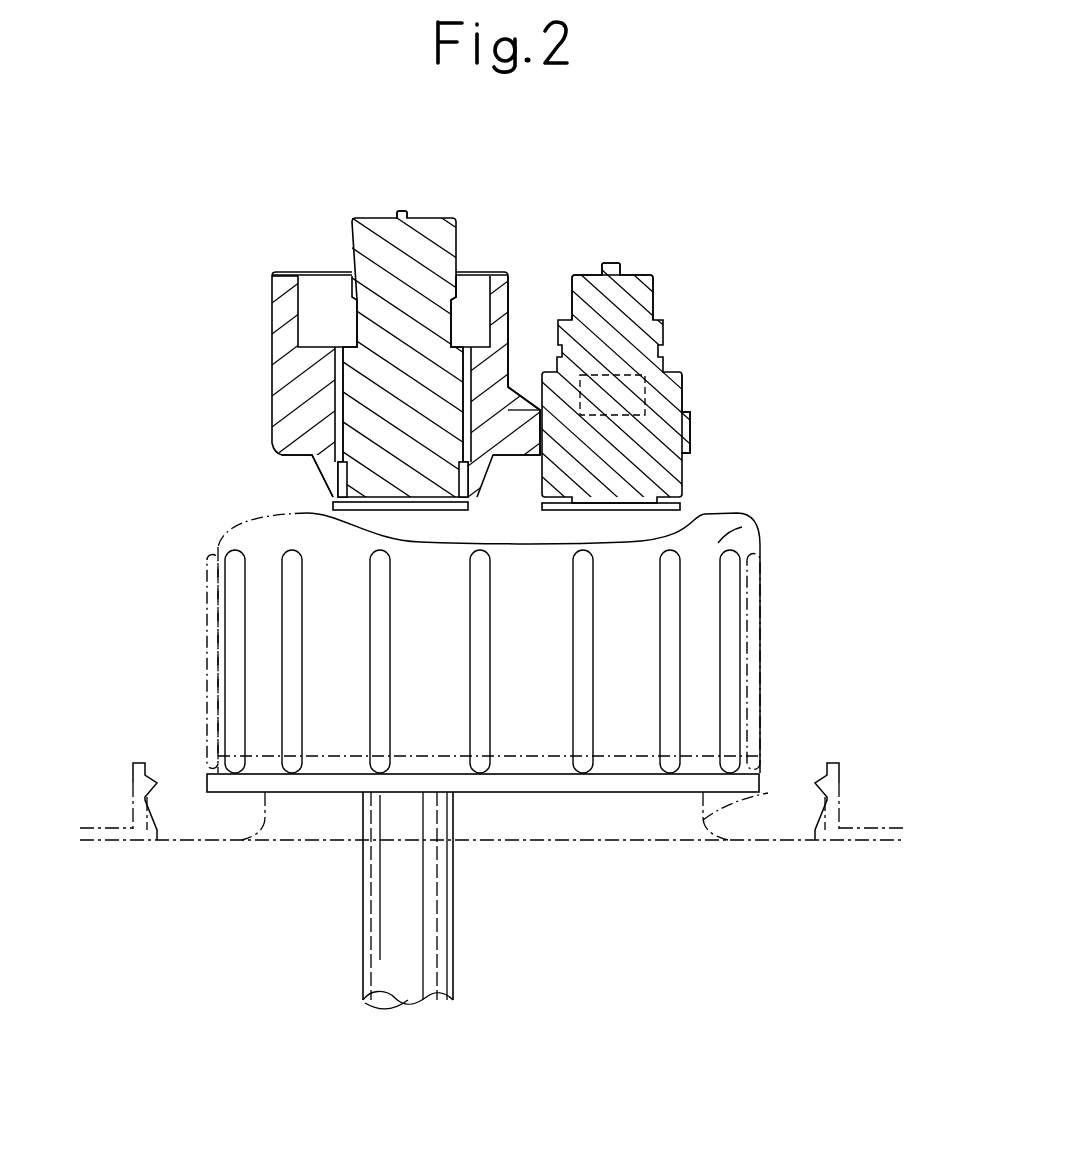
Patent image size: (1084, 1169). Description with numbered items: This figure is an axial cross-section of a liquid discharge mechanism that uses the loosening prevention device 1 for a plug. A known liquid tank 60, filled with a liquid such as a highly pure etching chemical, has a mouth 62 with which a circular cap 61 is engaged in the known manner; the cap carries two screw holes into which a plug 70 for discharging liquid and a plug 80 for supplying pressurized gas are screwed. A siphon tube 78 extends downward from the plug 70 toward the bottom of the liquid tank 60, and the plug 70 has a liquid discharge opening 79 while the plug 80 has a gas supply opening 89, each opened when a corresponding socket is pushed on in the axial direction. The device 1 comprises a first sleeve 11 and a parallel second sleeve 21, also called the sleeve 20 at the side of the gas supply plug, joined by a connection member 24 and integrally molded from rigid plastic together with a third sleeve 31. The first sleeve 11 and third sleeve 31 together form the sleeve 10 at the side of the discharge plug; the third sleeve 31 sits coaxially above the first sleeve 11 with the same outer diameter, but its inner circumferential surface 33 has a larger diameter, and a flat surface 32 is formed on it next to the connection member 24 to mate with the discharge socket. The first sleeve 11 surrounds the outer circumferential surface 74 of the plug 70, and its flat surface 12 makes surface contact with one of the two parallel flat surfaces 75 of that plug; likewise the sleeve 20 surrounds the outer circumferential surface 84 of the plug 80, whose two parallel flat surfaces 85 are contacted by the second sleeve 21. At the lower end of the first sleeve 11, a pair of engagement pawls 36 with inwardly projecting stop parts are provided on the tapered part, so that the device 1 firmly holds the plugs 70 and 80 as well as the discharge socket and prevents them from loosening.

The loosening prevention device 1 is at (530, 278).
The sleeve at the side of the plug for discharging liquid 10 is at (240, 340).
The first sleeve 11 is at (383, 389).
The flat surface 12 is at (333, 378).
The sleeve at the side of the plug for supplying pressurized-gas 20 is at (706, 465).
The second sleeve 21 is at (690, 436).
The connection member 24 is at (513, 420).
The third sleeve 31 is at (275, 289).
The flat surface 32 is at (472, 288).
The inner circumferential surface 33 is at (302, 300).
The engagement pawls 36 is at (335, 470).
The liquid tank 60 is at (818, 668).
The circular cap 61 is at (743, 530).
The mouth 62 is at (768, 793).
The plug for discharging liquid 70 is at (416, 353).
The outer circumferential surface 74 is at (330, 442).
The flat surfaces 75 is at (512, 343).
The siphon tube 78 is at (437, 960).
The liquid discharge opening 79 is at (397, 212).
The plug for supplying pressurized-gas 80 is at (648, 365).
The outer circumferential surface 84 is at (682, 392).
The flat surface 85 is at (688, 383).
The gas supply opening 89 is at (614, 264).